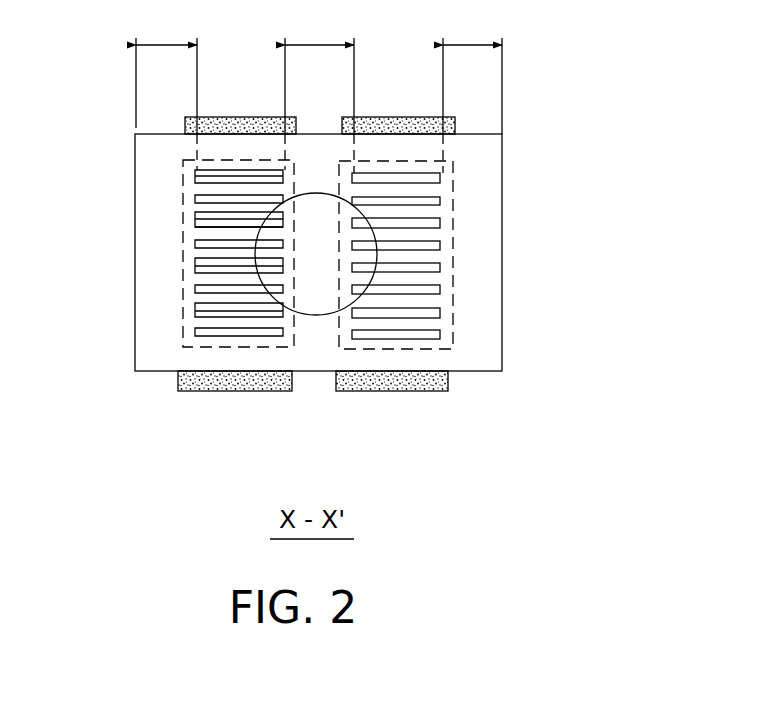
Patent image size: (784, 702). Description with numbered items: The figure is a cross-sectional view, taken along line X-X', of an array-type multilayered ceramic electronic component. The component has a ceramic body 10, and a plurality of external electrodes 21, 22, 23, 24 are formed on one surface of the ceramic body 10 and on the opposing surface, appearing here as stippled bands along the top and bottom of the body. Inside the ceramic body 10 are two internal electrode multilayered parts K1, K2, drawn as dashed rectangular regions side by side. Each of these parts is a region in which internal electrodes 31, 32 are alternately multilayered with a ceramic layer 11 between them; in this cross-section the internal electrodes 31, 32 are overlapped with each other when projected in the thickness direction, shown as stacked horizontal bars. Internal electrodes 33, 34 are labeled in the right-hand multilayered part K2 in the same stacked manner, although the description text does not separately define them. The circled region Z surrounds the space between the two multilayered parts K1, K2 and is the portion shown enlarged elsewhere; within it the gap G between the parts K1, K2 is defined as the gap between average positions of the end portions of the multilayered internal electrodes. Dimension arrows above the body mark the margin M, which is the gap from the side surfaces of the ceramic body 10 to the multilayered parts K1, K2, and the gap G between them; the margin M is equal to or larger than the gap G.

The ceramic body 10 is at (502, 258).
The ceramic layer 11 is at (222, 229).
The external electrode 21 is at (236, 117).
The external electrode 22 is at (234, 391).
The external electrode 23 is at (398, 117).
The external electrode 24 is at (394, 391).
The internal electrode 31 is at (196, 177).
The internal electrode 32 is at (196, 202).
The third internal electrode 33 is at (440, 180).
The fourth internal electrode 34 is at (440, 203).
The first internal electrode multilayered part K1 is at (182, 307).
The second internal electrode multilayered part K2 is at (453, 311).
The part Z is at (313, 316).
The margin M is at (319, 93).
The gap G is at (319, 93).